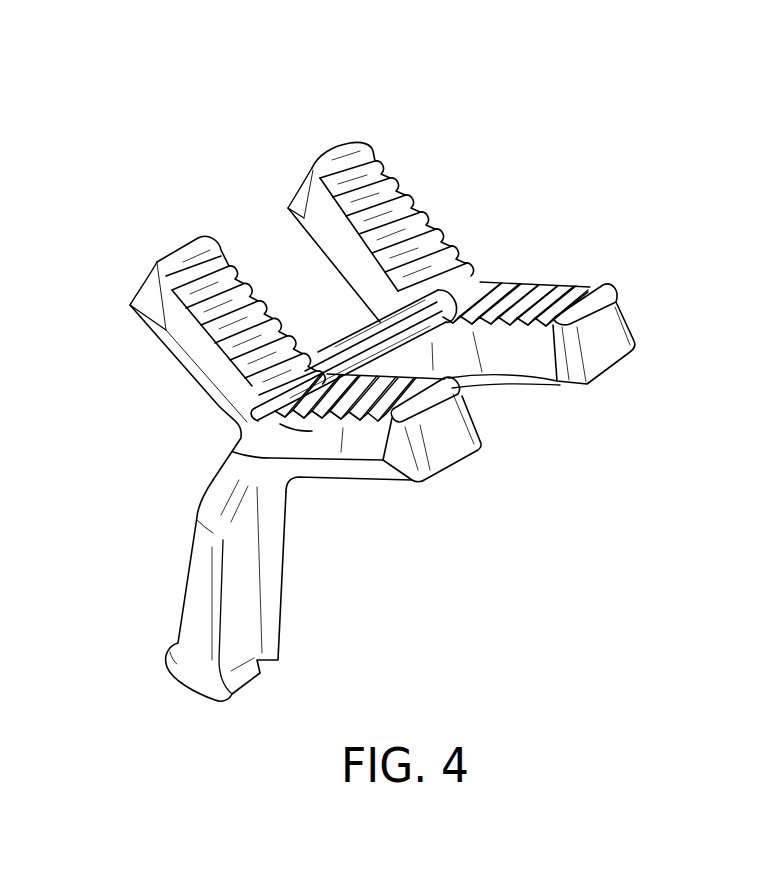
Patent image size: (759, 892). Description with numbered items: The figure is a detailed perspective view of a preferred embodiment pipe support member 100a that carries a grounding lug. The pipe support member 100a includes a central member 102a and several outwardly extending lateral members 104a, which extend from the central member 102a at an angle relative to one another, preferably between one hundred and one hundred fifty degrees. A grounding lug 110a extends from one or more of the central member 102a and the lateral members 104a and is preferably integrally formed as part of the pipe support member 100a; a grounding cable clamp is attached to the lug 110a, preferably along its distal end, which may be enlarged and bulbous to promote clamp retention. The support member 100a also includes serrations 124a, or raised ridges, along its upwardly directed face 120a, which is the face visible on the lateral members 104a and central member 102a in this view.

The pipe support member 100a is at (157, 113).
The central member 102a is at (352, 345).
The lateral members 104a is at (298, 166).
The grounding lug 110a is at (192, 600).
The upwardly directed face 120a is at (395, 212).
The serrations 124a is at (436, 240).